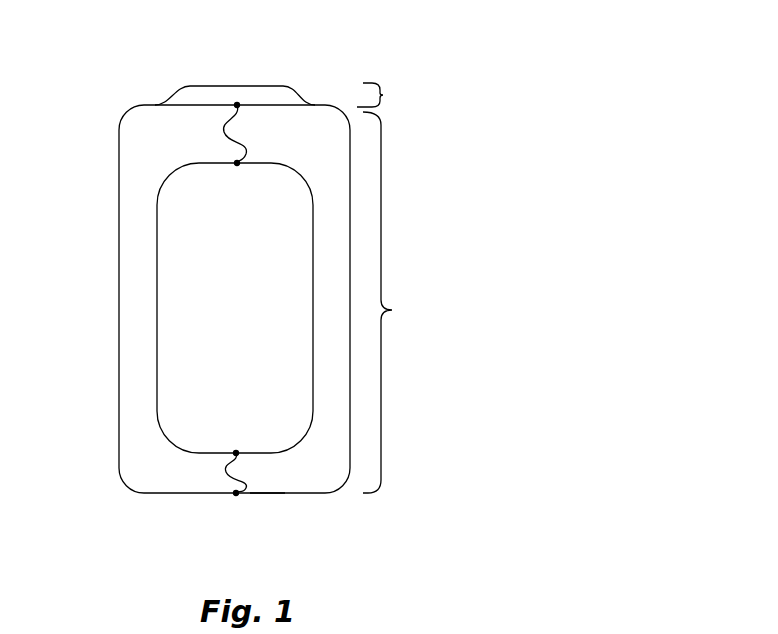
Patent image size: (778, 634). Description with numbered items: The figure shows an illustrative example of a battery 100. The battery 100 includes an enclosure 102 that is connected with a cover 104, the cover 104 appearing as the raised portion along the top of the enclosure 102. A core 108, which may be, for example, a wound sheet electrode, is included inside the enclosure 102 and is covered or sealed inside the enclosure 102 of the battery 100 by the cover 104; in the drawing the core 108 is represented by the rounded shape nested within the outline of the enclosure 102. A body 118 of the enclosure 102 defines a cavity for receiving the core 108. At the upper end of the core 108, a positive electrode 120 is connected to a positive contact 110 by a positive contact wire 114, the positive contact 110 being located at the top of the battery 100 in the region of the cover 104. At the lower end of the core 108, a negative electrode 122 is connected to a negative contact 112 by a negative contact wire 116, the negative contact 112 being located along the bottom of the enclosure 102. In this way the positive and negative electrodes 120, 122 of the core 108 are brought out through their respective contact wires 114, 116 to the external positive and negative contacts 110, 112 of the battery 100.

The battery 100 is at (430, 43).
The enclosure 102 is at (394, 310).
The cover 104 is at (385, 95).
The core 108 is at (182, 263).
The positive contact 110 is at (208, 94).
The negative contact 112 is at (263, 494).
The positive contact wire 114 is at (238, 104).
The negative contact wire 116 is at (236, 493).
The body 118 is at (119, 381).
The positive electrode 120 is at (237, 165).
The negative electrode 122 is at (237, 452).